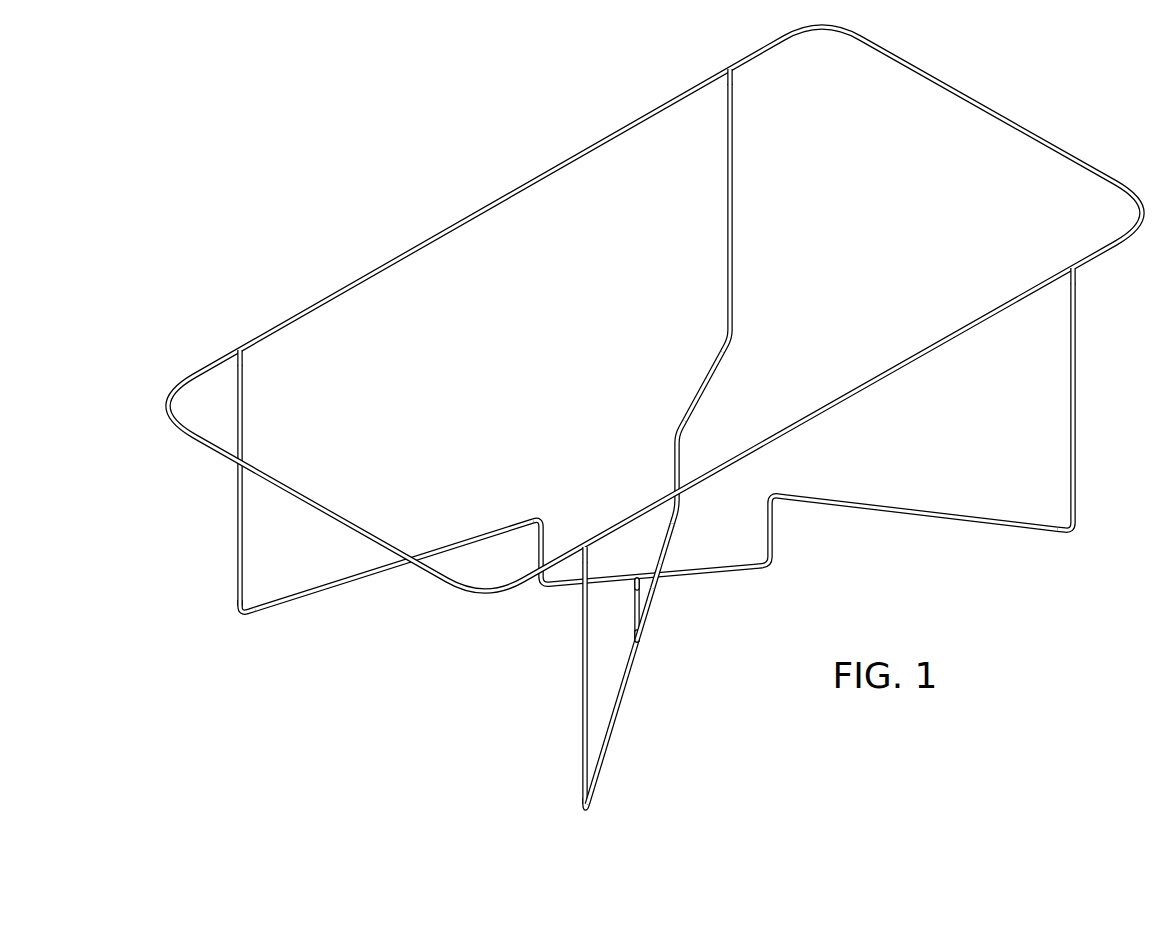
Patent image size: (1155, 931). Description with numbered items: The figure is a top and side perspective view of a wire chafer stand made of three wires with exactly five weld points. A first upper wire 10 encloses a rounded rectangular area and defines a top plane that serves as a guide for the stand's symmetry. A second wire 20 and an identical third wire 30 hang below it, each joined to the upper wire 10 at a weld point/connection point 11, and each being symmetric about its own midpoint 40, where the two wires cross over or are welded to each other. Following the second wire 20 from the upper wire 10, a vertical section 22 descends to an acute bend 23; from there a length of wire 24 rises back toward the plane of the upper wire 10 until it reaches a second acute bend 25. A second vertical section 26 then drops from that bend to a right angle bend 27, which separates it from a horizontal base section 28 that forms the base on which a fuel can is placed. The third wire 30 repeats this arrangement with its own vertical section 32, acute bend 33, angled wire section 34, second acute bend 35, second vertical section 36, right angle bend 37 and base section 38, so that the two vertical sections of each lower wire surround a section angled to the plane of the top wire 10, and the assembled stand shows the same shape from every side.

The first upper wire 10 is at (352, 282).
The weld point/connection point 11 is at (238, 351).
The second wire 20 is at (652, 480).
The vertical section 22 is at (245, 408).
The acute bend 23 is at (237, 610).
The length of wire 24 is at (350, 587).
The second acute bend 25 is at (540, 517).
The second vertical section 26 is at (546, 540).
The right angle bend 27 is at (543, 589).
The horizontal base section 28 is at (717, 580).
The third wire 30 is at (694, 448).
The vertical section 32 is at (733, 209).
The acute bend 33 is at (733, 340).
The wire section 34 is at (704, 392).
The acute bend 35 is at (676, 434).
The vertical section 36 is at (674, 468).
The right angle bend 37 is at (680, 510).
The wire section 38 is at (664, 548).
The midpoint 40 is at (658, 580).